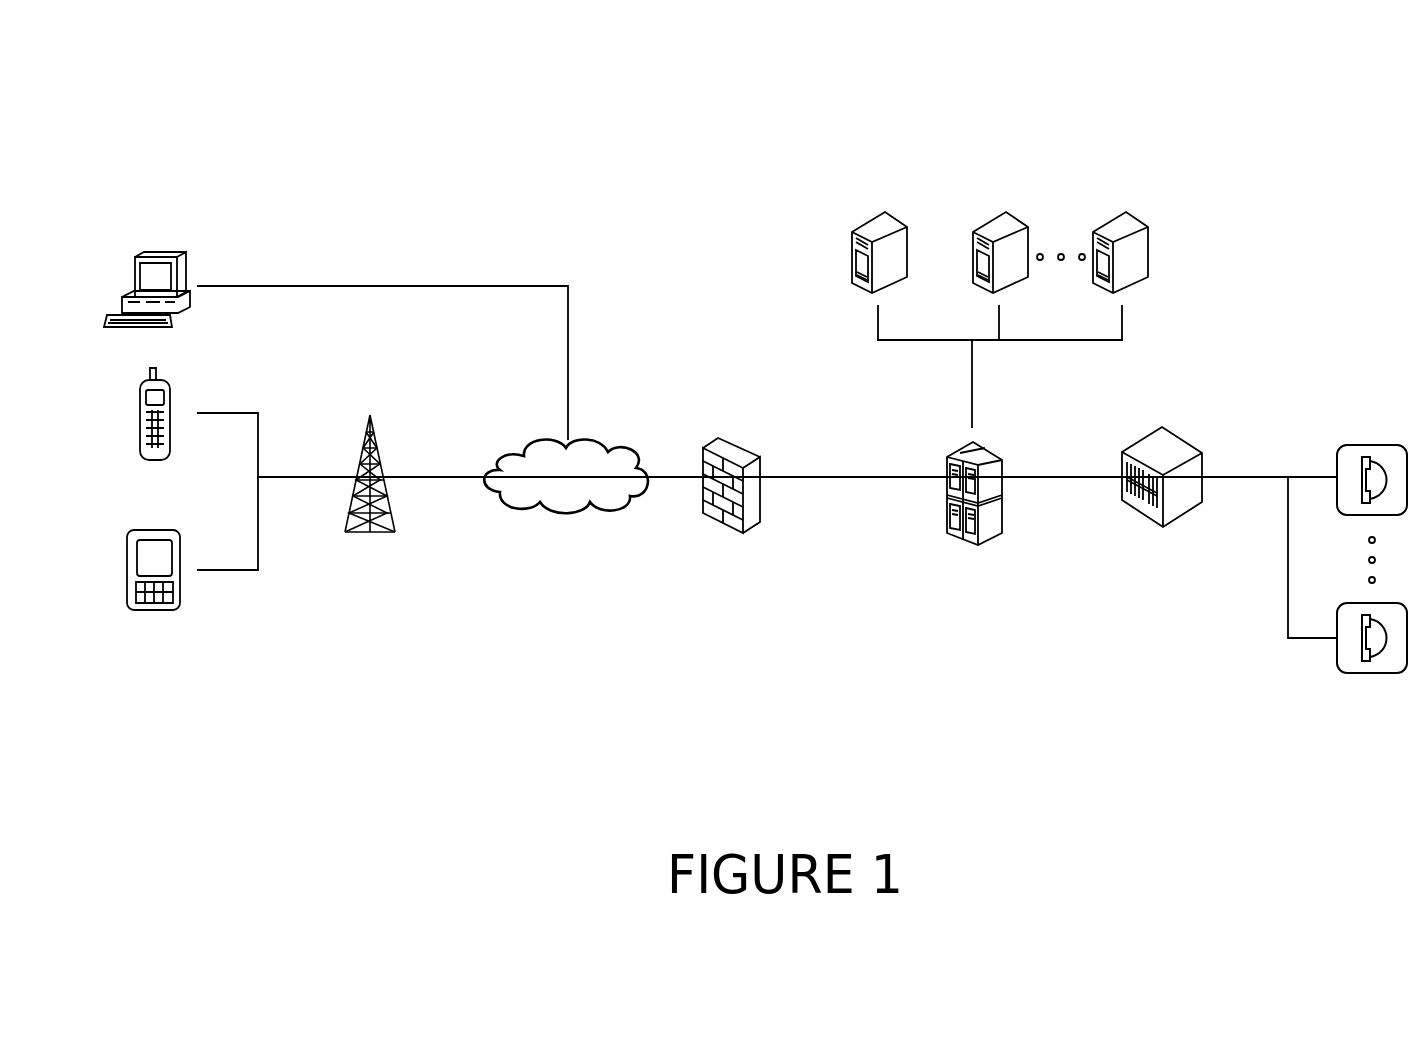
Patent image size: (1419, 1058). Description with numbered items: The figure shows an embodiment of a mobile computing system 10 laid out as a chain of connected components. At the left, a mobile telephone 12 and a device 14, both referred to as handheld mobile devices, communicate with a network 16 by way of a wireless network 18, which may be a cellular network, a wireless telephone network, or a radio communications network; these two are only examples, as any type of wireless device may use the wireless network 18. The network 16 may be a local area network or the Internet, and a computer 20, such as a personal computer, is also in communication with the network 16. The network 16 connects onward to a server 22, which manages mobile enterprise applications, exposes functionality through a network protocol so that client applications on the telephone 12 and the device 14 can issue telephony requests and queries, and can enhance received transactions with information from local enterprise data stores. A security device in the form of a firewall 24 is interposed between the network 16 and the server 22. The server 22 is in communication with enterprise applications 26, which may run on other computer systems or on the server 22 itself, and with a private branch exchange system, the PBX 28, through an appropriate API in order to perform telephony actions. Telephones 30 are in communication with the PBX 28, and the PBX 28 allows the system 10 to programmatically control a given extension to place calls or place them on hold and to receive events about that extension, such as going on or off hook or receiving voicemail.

The mobile computing system 10 is at (803, 135).
The mobile telephone 12 is at (162, 380).
The device 14 is at (160, 533).
The network 16 is at (606, 445).
The wireless network 18 is at (376, 455).
The computer 20 is at (163, 262).
The server 22 is at (992, 456).
The firewall 24 is at (736, 446).
The enterprise applications 26 is at (862, 228).
The private branch exchange (PBX) system 28 is at (1190, 440).
The telephones 30 is at (1360, 446).